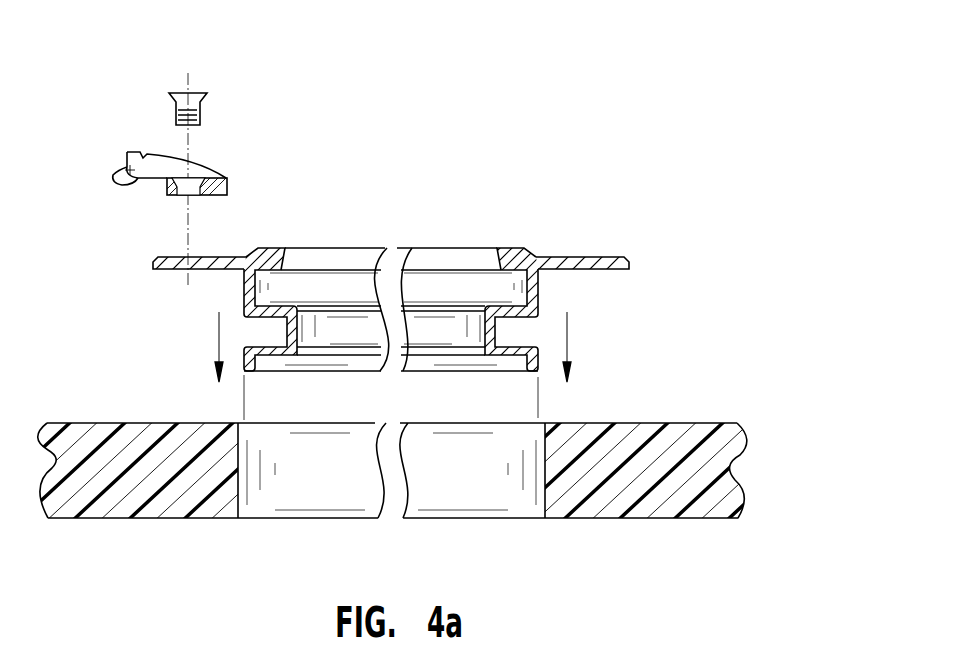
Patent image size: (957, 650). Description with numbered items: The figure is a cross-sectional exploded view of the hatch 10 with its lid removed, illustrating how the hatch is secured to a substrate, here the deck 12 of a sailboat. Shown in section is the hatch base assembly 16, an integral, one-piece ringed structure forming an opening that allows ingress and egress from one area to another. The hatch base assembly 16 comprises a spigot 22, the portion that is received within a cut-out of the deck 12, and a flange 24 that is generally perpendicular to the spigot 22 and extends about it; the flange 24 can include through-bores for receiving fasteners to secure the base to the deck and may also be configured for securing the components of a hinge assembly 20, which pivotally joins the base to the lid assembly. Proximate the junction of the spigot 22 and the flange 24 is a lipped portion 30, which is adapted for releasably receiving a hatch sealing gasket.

The hatch 10 is at (418, 285).
The deck 12 is at (418, 473).
The hatch base assembly 16 is at (331, 375).
The hinge assembly 20 is at (155, 158).
The spigot 22 is at (407, 279).
The flange 24 is at (600, 257).
The lipped portion 30 is at (512, 262).